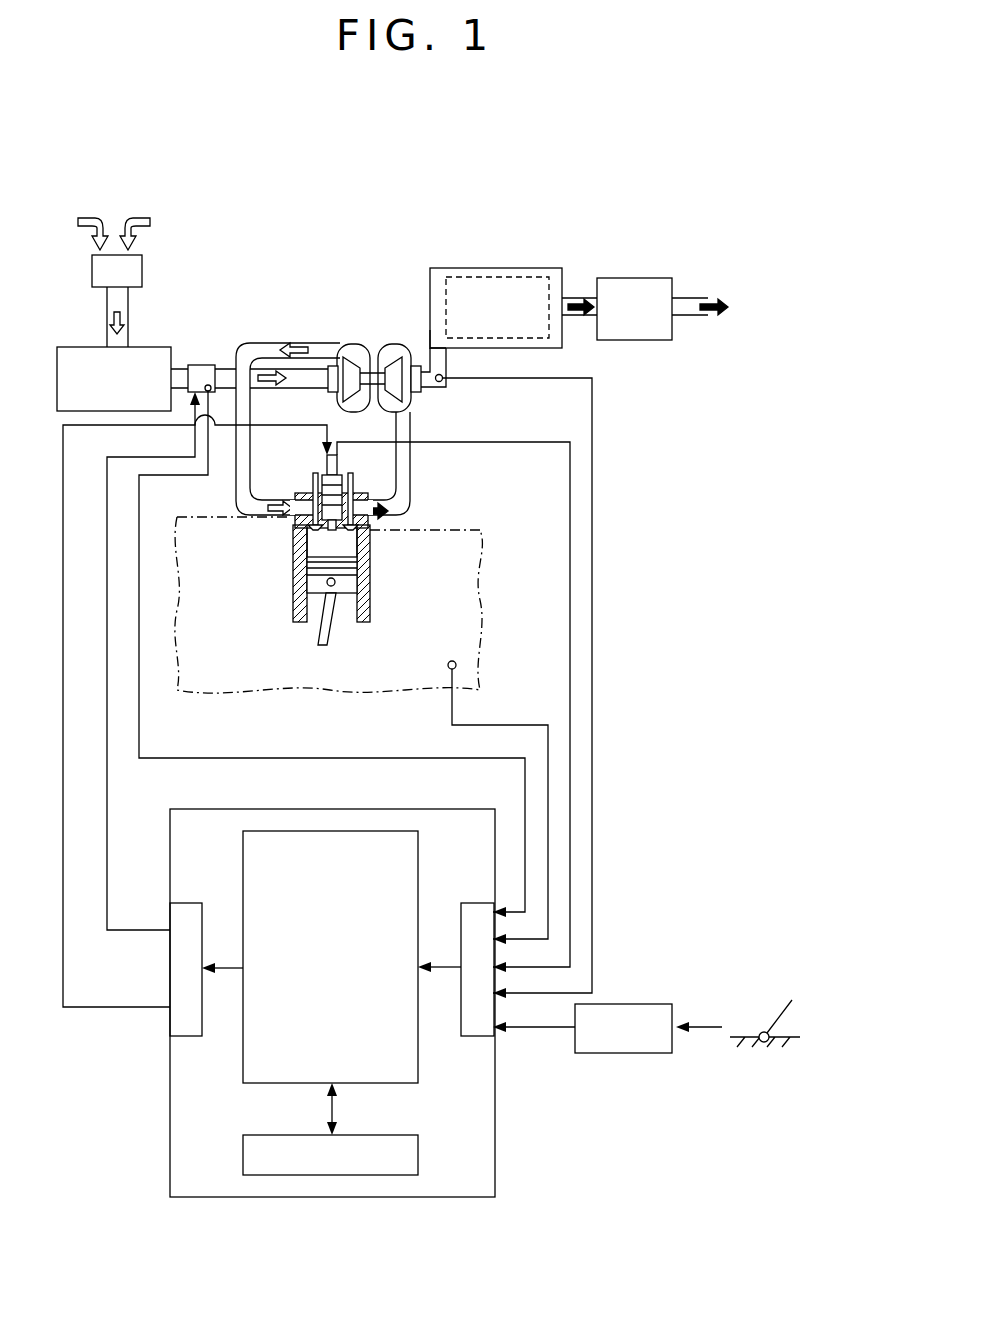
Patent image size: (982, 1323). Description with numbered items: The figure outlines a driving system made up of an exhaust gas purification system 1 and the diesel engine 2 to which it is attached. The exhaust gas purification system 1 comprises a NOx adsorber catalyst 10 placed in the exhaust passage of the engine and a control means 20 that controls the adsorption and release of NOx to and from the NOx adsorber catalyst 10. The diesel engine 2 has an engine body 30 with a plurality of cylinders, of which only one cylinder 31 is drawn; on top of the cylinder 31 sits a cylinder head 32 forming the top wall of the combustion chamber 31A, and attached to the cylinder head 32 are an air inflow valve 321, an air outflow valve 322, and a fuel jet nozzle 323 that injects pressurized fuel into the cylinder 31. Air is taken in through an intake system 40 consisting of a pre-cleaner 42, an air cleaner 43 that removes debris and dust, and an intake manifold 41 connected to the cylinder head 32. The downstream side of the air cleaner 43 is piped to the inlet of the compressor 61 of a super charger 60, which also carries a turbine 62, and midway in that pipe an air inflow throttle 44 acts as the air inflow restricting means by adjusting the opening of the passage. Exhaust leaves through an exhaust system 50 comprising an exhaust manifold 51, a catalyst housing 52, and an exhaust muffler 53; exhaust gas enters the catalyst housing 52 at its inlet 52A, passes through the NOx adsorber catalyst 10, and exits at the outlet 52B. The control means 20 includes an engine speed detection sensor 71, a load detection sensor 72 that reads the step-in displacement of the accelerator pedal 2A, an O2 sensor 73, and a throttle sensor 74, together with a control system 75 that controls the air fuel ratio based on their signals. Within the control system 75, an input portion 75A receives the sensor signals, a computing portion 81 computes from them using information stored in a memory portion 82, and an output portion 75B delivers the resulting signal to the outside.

The exhaust gas purification system 1 is at (640, 757).
The diesel engine 2 is at (190, 207).
The accelerator pedal 2A is at (774, 972).
The NOx adsorber catalyst 10 is at (513, 268).
The control means 20 is at (616, 845).
The engine body 30 is at (490, 575).
The cylinder 31 is at (368, 578).
The combustion chamber 31A is at (355, 545).
The cylinder head 32 is at (292, 533).
The air inflow valve 321 is at (313, 495).
The air outflow valve 322 is at (353, 488).
The fuel jet nozzle 323 is at (338, 460).
The intake system 40 is at (213, 283).
The intake manifold 41 is at (252, 518).
The pre-cleaner 42 is at (93, 264).
The air cleaner 43 is at (85, 347).
The air inflow throttle 44 is at (195, 365).
The exhaust system 50 is at (428, 405).
The exhaust manifold 51 is at (397, 520).
The catalyst housing 52 is at (455, 268).
The inlet 52A is at (447, 350).
The outlet 52B is at (565, 298).
The exhaust muffler 53 is at (640, 278).
The super charger 60 is at (393, 262).
The compressor 61 is at (352, 345).
The turbine 62 is at (394, 346).
The engine speed detection sensor 71 is at (450, 672).
The load detection sensor 72 is at (640, 1004).
The O2 sensor 73 is at (443, 380).
The throttle sensor 74 is at (209, 385).
The control system 75 is at (495, 1148).
The input portion 75A is at (478, 1036).
The output portion 75B is at (190, 1036).
The computing portion 81 is at (343, 831).
The memory portion 82 is at (368, 1175).